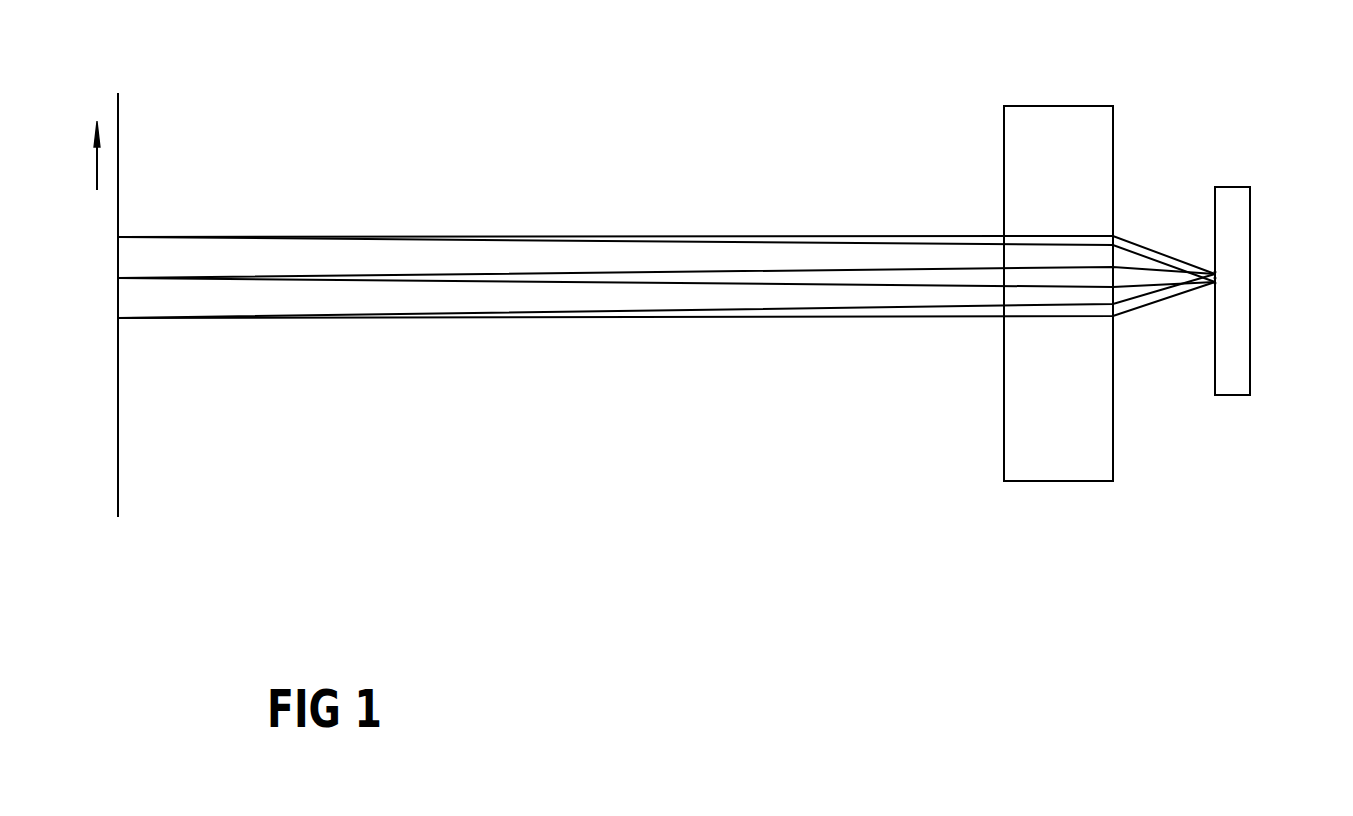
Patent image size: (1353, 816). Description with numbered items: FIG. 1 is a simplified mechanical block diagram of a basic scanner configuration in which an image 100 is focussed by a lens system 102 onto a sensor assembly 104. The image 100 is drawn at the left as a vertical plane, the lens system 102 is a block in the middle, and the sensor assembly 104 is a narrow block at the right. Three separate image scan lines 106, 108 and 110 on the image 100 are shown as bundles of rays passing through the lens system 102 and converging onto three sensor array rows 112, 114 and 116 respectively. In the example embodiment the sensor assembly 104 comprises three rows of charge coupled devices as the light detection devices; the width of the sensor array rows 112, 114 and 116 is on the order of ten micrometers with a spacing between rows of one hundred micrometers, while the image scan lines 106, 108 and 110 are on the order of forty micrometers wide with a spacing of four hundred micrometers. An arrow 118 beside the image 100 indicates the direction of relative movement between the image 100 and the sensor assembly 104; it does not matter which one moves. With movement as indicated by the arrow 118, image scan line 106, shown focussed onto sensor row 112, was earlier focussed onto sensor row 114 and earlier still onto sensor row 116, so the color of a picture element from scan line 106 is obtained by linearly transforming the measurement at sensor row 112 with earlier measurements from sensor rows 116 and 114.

The image 100 is at (118, 473).
The lens system 102 is at (1062, 458).
The sensor assembly 104 is at (1250, 395).
The image scan line 106 is at (118, 237).
The image scan line 108 is at (118, 278).
The image scan line 110 is at (118, 318).
The sensor array row 112 is at (1215, 271).
The sensor array row 114 is at (1215, 279).
The sensor array row 116 is at (1215, 283).
The arrow 118 is at (95, 153).